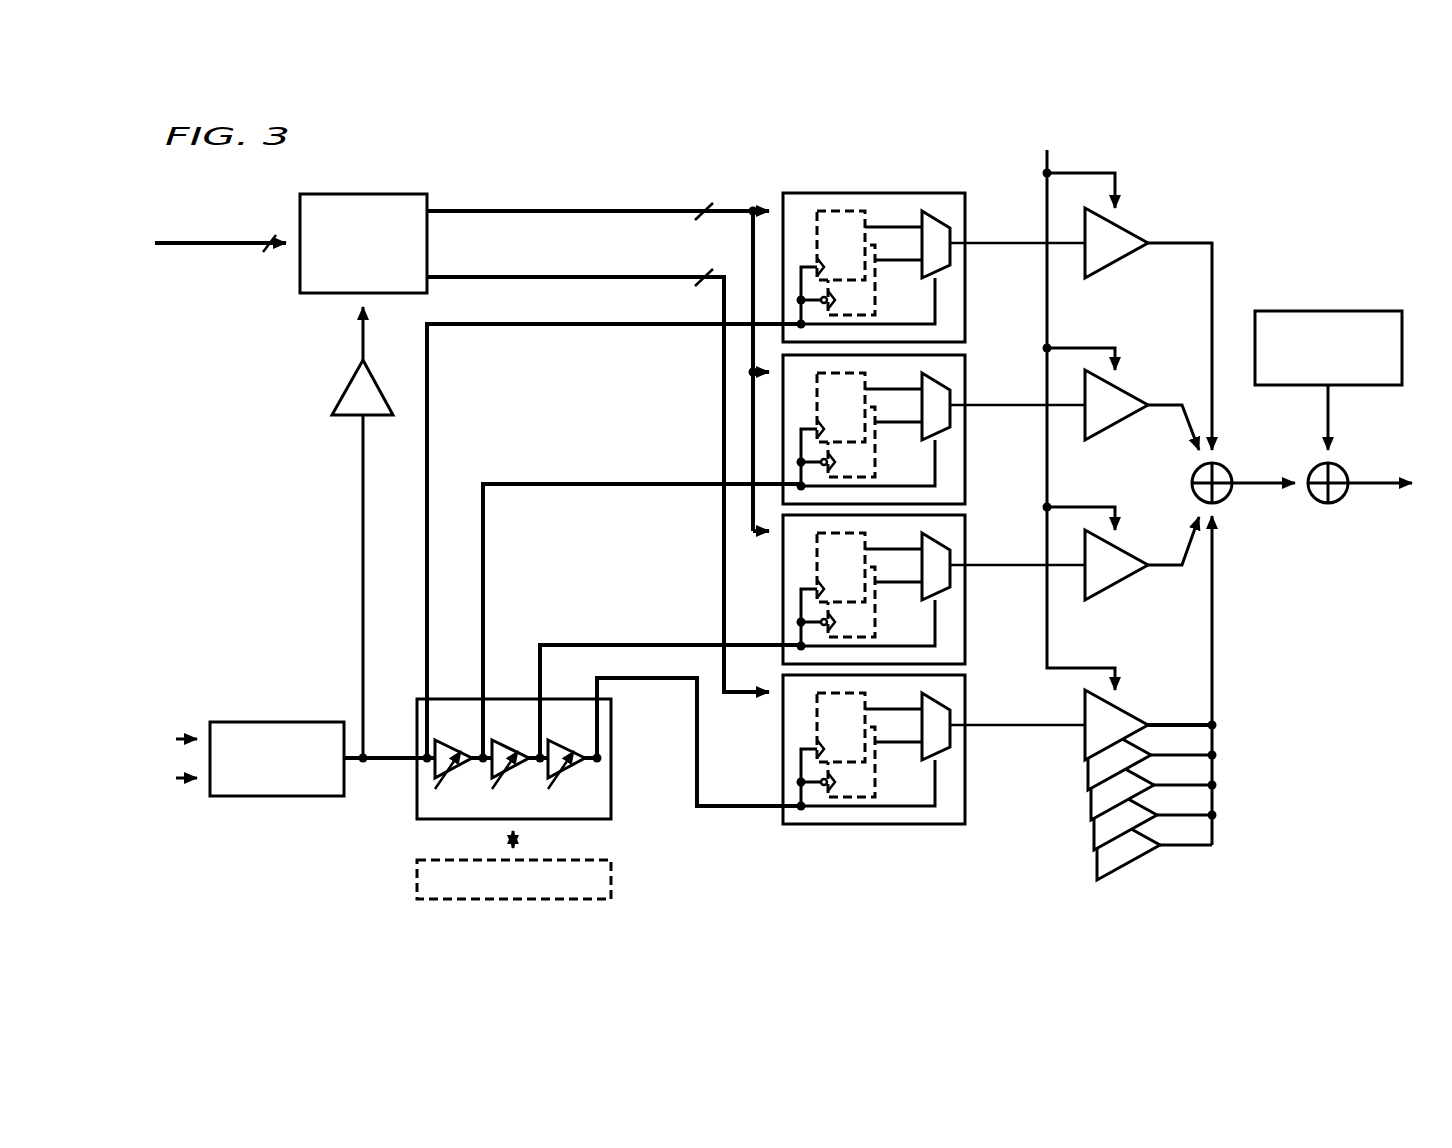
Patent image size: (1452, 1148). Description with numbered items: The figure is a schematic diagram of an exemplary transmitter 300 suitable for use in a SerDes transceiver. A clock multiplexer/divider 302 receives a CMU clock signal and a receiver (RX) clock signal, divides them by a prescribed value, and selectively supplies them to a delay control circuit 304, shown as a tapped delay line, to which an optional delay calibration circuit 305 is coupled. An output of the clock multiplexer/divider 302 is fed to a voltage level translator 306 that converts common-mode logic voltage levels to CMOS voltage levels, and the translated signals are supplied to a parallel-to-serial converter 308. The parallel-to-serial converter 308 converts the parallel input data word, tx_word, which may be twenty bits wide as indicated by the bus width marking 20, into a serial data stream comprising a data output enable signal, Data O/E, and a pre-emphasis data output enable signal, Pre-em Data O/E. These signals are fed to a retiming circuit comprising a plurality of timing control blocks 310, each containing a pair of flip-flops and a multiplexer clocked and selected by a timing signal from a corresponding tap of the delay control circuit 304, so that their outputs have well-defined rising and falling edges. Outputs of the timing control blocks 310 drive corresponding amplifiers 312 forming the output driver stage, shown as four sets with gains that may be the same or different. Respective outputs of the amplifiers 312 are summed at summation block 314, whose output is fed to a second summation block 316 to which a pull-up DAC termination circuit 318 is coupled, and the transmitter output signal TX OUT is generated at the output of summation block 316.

The transmitter 300 is at (242, 178).
The clock multiplexer/divider 302 is at (283, 722).
The delay control circuit 304 is at (417, 806).
The delay calibration circuit 305 is at (417, 879).
The voltage level translator 306 is at (353, 382).
The parallel-to-serial (P2S) converter 308 is at (378, 194).
The timing control blocks 310 is at (965, 200).
The amplifiers 312 is at (1133, 228).
The summation block 314 is at (1230, 470).
The second summation block 316 is at (1328, 503).
The pull-up DAC/termination 318 is at (1312, 311).
The TX_WORD bus 20 is at (220, 231).